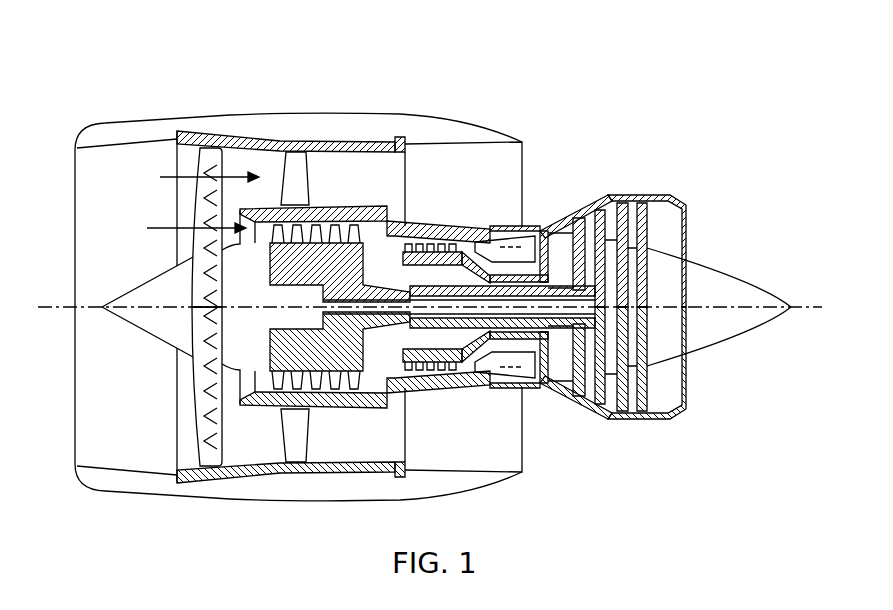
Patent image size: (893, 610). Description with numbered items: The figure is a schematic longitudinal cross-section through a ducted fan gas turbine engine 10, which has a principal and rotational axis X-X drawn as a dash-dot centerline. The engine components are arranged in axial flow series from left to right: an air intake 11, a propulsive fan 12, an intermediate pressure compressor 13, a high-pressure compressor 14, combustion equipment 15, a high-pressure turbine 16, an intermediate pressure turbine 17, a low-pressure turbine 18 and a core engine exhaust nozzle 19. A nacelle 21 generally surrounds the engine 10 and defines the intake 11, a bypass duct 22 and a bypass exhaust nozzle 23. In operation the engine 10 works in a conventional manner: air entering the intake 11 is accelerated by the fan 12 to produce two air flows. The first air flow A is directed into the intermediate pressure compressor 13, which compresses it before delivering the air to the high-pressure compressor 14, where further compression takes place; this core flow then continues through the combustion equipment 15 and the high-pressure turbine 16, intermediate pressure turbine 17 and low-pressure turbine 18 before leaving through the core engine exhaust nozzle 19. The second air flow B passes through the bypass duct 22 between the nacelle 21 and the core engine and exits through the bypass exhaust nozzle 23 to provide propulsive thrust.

The ducted fan gas turbine engine 10 is at (430, 253).
The air intake 11 is at (122, 143).
The propulsive fan 12 is at (197, 425).
The intermediate pressure compressor 13 is at (333, 392).
The high-pressure compressor 14 is at (437, 243).
The combustion equipment 15 is at (490, 371).
The high-pressure turbine 16 is at (543, 390).
The intermediate pressure turbine 17 is at (562, 216).
The low-pressure turbine 18 is at (592, 410).
The core engine exhaust nozzle 19 is at (674, 198).
The nacelle 21 is at (336, 124).
The bypass duct 22 is at (481, 181).
The bypass exhaust nozzle 23 is at (522, 142).